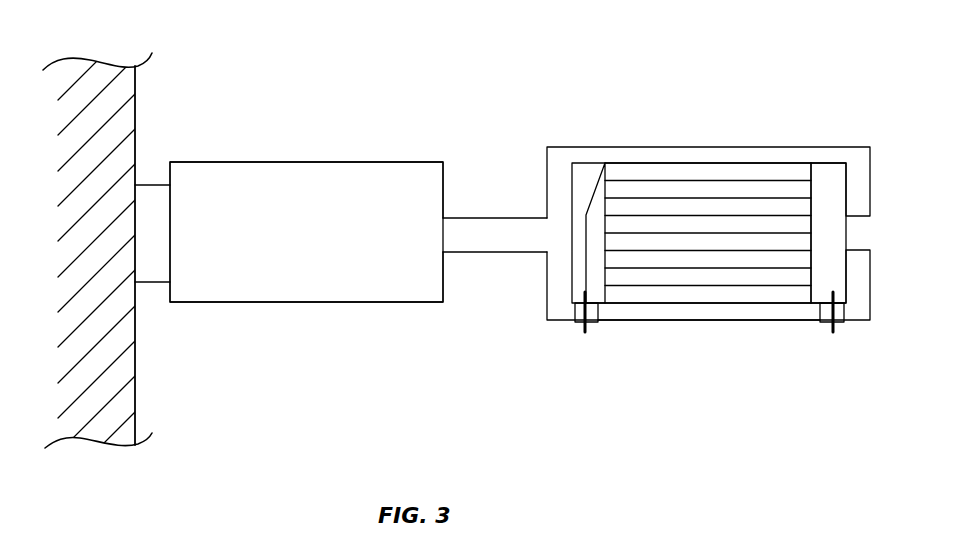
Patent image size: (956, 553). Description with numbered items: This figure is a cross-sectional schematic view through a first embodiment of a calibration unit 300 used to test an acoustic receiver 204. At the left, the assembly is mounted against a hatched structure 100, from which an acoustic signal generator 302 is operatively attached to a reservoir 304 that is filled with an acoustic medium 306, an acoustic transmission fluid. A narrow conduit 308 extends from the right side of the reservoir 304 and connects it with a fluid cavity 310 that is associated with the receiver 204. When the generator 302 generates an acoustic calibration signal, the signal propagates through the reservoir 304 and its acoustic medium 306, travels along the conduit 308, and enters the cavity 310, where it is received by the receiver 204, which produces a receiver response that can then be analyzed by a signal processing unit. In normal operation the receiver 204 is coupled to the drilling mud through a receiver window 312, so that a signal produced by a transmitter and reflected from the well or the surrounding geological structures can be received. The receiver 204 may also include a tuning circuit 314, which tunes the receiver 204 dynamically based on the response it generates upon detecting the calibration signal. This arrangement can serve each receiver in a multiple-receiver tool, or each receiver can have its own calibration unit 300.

The wall / support structure 100 is at (96, 256).
The calibration unit 300 is at (497, 85).
The acoustic signal generator 302 is at (183, 207).
The reservoir 304 is at (306, 262).
The acoustic medium 306 is at (326, 245).
The conduit 308 is at (495, 264).
The cavity 310 is at (583, 187).
The receiver window 312 is at (698, 113).
The tuning circuit 314 is at (708, 212).
The receiver 204 is at (718, 355).